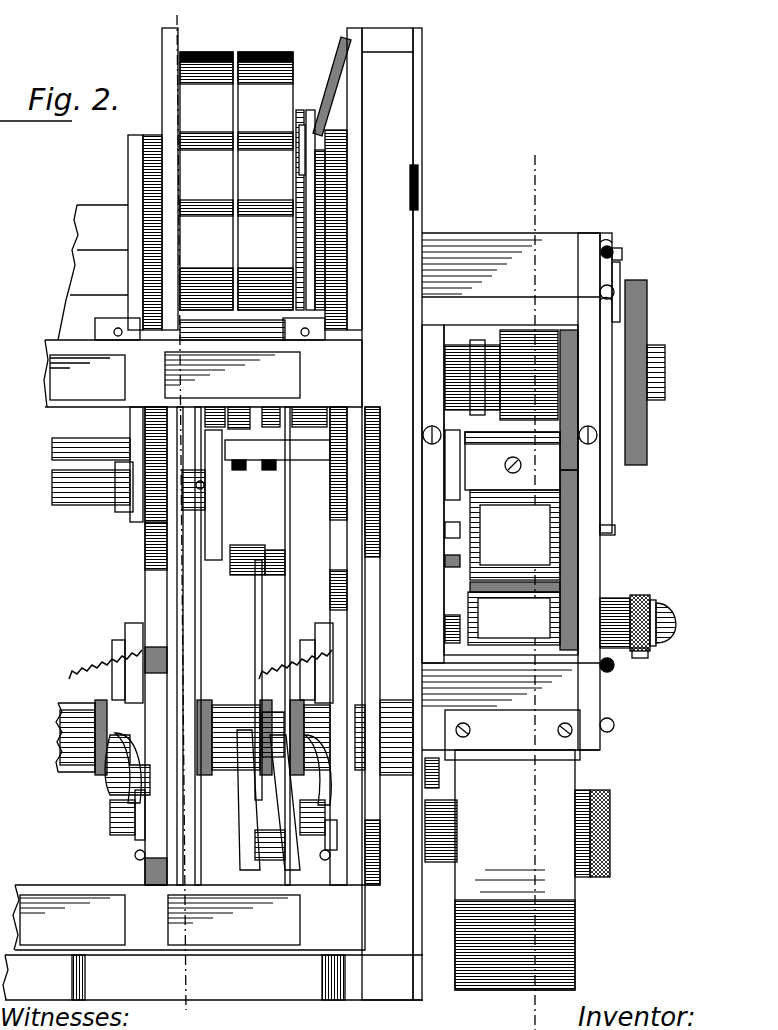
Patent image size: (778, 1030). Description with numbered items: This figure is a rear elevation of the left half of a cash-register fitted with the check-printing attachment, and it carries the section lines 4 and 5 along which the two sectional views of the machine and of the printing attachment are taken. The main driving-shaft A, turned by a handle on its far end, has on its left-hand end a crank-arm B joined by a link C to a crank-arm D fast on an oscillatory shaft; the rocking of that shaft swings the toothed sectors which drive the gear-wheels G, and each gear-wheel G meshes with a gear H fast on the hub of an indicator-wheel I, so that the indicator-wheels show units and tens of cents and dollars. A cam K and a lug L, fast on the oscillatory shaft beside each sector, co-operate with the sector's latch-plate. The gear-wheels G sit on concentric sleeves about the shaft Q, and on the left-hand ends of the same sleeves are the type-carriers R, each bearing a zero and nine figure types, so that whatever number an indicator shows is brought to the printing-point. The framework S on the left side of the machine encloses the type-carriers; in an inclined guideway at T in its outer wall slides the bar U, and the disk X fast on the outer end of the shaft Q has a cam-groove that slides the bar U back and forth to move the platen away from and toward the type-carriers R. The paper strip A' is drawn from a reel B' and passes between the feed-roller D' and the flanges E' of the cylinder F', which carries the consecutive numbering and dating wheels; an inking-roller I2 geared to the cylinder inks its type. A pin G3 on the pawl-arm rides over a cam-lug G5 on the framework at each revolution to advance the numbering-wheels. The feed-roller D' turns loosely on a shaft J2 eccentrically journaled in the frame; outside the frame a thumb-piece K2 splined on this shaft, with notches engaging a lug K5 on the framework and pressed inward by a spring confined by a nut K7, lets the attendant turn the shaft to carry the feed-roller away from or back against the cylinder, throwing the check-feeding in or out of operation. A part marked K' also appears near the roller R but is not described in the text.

The section line 4 4 is at (179, 505).
The section line 5 5 is at (533, 584).
The indicator-wheel I is at (202, 52).
The gear H is at (348, 146).
The main driving-shaft A is at (92, 485).
The crank-arm B is at (218, 495).
The link C is at (256, 630).
The crank-arm D is at (255, 800).
The gear-wheel G is at (330, 490).
The lug L is at (334, 628).
The cam K is at (200, 646).
The framework S is at (595, 585).
The inclined guideway T is at (620, 262).
The sliding bar U is at (618, 278).
The disk X is at (647, 437).
The shaft Q is at (665, 372).
The spool K' is at (472, 360).
The type-carrier R is at (548, 345).
The inking-roller I2 is at (512, 461).
The cylinder F' is at (515, 535).
The flanges E' is at (521, 600).
The feed-roller D' is at (514, 618).
The cam-lug G5 is at (445, 530).
The pin G3 is at (445, 560).
The shaft J2 is at (445, 628).
The lug K5 is at (610, 600).
The nut K7 is at (672, 612).
The thumb-piece K2 is at (640, 658).
The paper strip A' is at (515, 870).
The reel B' is at (596, 858).